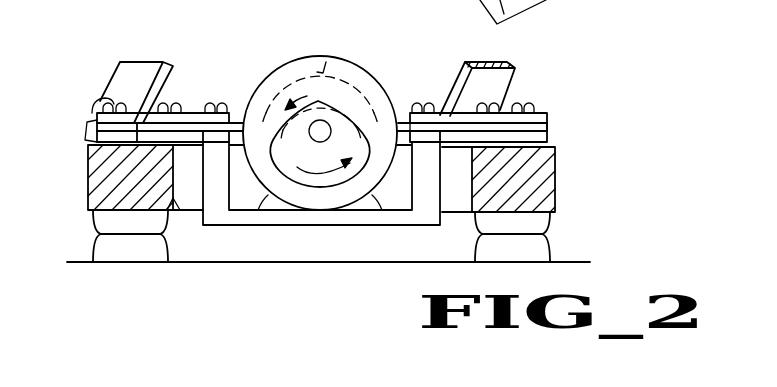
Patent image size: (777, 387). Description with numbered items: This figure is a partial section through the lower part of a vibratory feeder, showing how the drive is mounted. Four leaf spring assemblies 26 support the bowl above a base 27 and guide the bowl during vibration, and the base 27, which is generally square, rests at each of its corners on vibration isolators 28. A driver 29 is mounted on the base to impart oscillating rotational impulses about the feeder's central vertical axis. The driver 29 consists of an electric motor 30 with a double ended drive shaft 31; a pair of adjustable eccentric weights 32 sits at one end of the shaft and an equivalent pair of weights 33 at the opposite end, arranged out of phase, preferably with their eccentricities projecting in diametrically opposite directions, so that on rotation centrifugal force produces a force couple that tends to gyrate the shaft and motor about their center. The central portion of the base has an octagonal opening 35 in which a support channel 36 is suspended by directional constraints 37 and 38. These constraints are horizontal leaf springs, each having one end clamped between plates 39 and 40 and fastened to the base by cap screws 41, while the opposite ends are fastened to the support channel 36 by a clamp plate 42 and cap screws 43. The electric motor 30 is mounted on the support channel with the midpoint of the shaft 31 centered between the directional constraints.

The leaf spring assemblies 26 is at (115, 70).
The base 27 is at (552, 190).
The vibration isolators 28 is at (110, 243).
The driver 29 is at (273, 60).
The electric motor 30 is at (315, 57).
The drive shaft 31 is at (332, 140).
The adjustable eccentric weights 32 is at (332, 59).
The eccentric weights 33 is at (318, 186).
The octagonal opening 35 is at (176, 212).
The support channel 36 is at (370, 217).
The directional constraint 37 is at (97, 128).
The directional constraint 38 is at (547, 132).
The plate 39 is at (100, 117).
The plate 40 is at (103, 140).
The cap screws 41 is at (105, 100).
The clamp plate 42 is at (205, 117).
The cap screws 43 is at (220, 107).